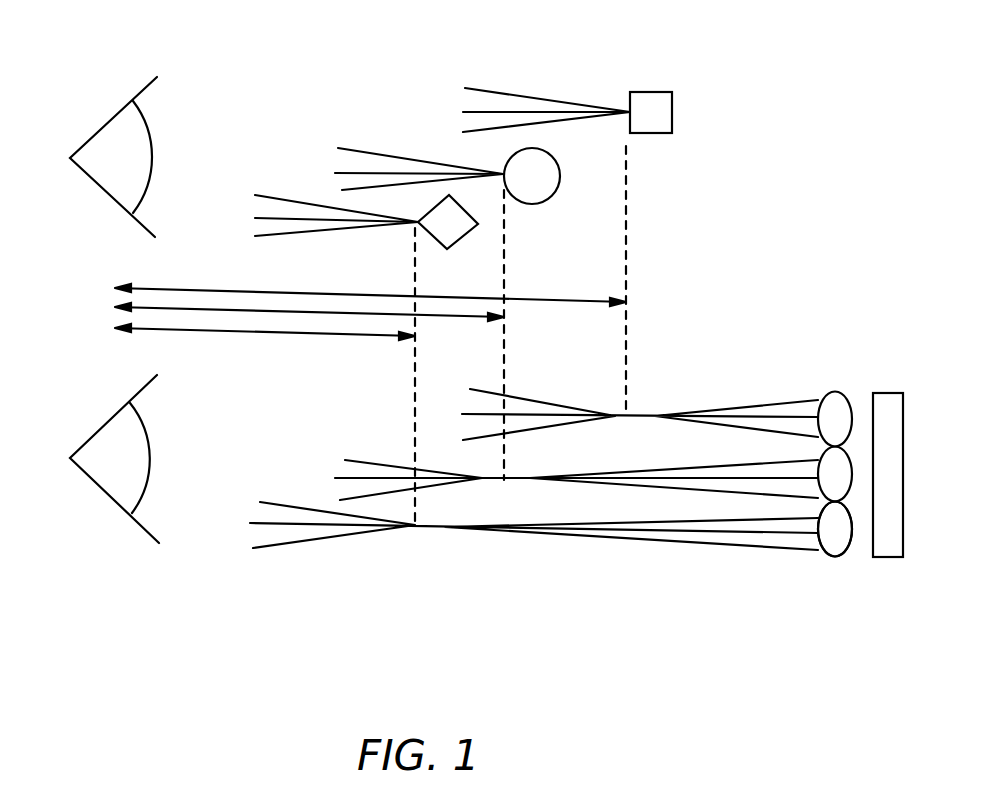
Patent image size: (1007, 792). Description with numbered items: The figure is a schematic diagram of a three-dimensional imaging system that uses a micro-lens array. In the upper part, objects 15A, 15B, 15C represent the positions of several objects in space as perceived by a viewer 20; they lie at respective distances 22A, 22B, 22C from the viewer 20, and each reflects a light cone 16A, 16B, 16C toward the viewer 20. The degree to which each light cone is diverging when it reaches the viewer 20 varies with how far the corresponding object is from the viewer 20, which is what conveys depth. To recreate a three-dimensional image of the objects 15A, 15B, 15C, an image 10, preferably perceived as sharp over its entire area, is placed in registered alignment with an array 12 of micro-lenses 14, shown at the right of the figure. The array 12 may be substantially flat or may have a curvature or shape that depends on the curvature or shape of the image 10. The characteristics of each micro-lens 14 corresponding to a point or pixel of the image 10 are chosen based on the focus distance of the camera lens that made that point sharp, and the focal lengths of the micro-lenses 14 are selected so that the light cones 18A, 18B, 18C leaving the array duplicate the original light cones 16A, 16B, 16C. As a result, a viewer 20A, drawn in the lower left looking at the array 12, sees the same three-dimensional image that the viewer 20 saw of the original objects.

The image 10 is at (896, 392).
The array 12 is at (834, 384).
The micro-lens 14 is at (838, 557).
The object 15A is at (651, 91).
The object 15B is at (548, 200).
The object 15C is at (467, 232).
The light cone 16A is at (470, 88).
The light cone 16B is at (357, 148).
The light cone 16C is at (268, 195).
The light cone 18A is at (528, 395).
The light cone 18B is at (367, 455).
The light cone 18C is at (275, 500).
The viewer 20 is at (110, 118).
The viewer 20A is at (98, 428).
The distance 22A is at (175, 288).
The distance 22B is at (112, 310).
The distance 22C is at (282, 333).